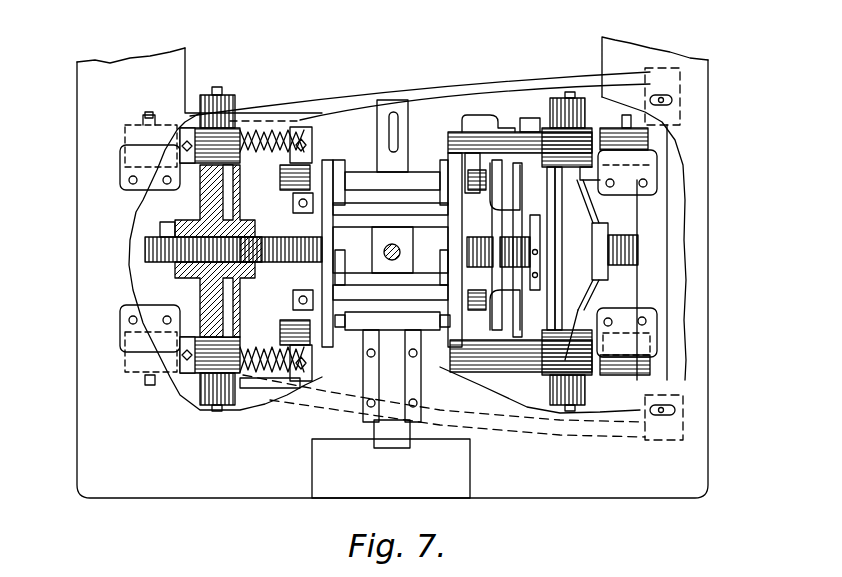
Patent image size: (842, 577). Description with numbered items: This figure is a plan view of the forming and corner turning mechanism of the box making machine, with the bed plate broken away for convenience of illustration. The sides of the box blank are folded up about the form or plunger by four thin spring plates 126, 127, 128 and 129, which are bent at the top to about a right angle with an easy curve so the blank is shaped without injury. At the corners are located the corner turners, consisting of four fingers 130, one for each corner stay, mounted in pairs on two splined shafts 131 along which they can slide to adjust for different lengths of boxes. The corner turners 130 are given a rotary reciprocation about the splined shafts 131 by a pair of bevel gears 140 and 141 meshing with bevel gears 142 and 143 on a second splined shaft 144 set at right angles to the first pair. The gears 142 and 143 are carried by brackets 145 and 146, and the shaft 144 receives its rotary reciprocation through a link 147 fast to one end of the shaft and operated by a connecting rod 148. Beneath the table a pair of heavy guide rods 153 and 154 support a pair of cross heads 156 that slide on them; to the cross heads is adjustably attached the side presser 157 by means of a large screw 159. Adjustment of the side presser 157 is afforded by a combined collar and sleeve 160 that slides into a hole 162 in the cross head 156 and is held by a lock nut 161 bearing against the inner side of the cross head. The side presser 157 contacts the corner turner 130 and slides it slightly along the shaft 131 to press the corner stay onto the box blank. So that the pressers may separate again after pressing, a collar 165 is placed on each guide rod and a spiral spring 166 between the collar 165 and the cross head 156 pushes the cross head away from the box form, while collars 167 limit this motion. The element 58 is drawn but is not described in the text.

The tube 58 is at (498, 283).
The spring plate 126 is at (455, 222).
The spring plate 127 is at (425, 325).
The spring plate 128 is at (260, 262).
The spring plate 129 is at (430, 180).
The corner turner finger 130 is at (335, 175).
The splined shaft 131 is at (433, 376).
The bevel gear 140 is at (505, 320).
The bevel gear 141 is at (530, 155).
The bevel gear 142 is at (601, 319).
The bevel gear 143 is at (555, 170).
The second splined shaft 144 is at (607, 245).
The bracket 145 is at (640, 265).
The bracket 146 is at (600, 180).
The link 147 is at (500, 150).
The connecting rod 148 is at (480, 125).
The guide rod 153 is at (320, 130).
The guide rod 154 is at (275, 395).
The cross head 156 is at (205, 310).
The side presser 157 is at (293, 203).
The large screw 159 is at (150, 247).
The combined collar and sleeve 160 is at (175, 228).
The lock nut 161 is at (270, 290).
The hole 162 is at (200, 220).
The collar 165 is at (300, 127).
The spiral spring 166 is at (250, 130).
The collar 167 is at (185, 128).